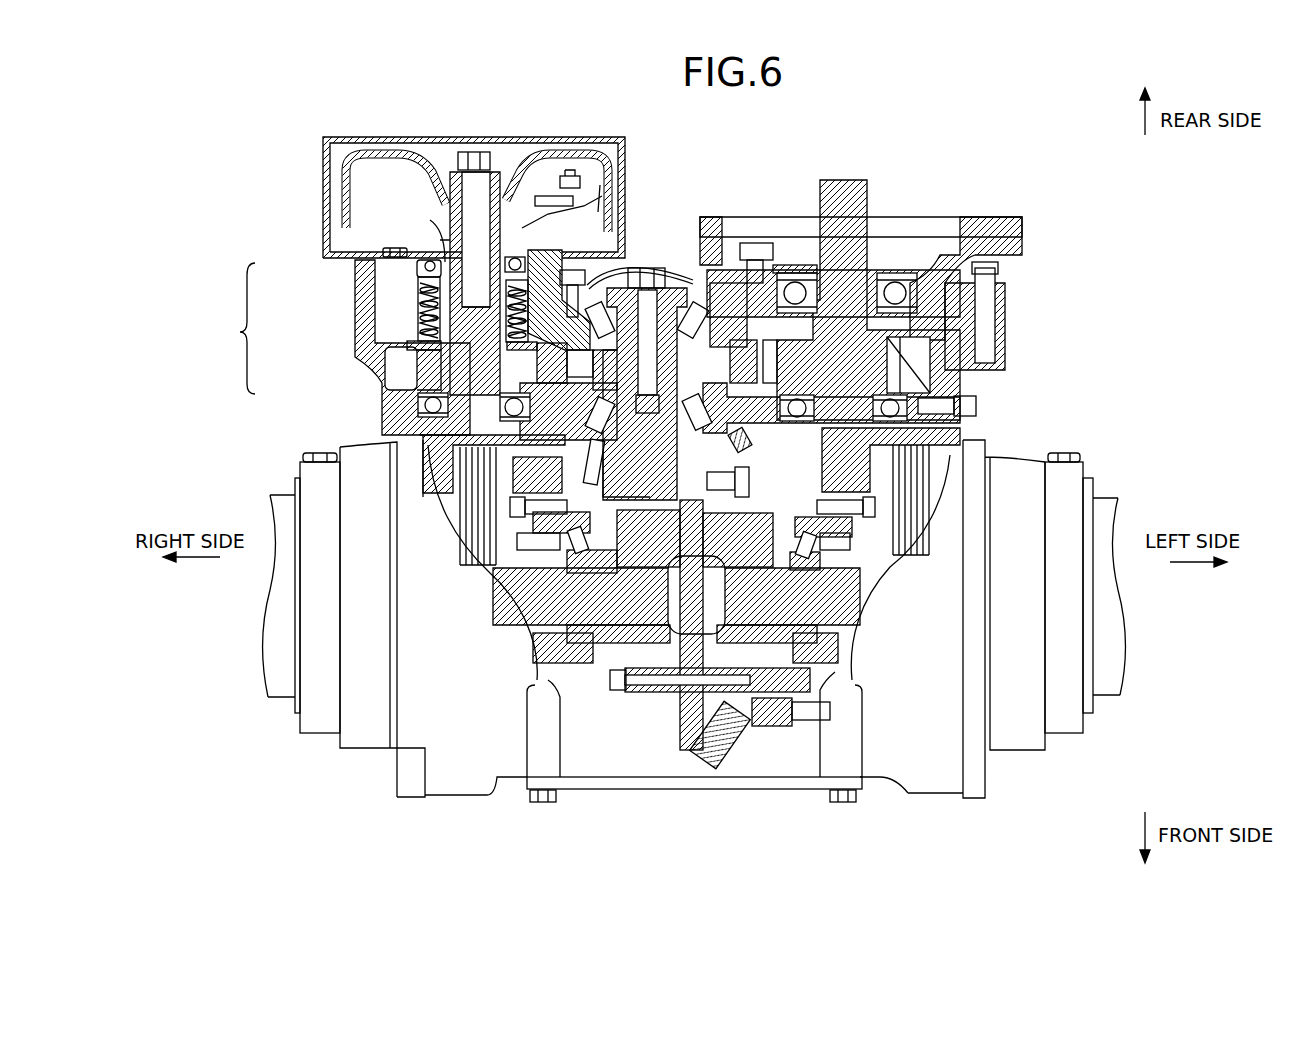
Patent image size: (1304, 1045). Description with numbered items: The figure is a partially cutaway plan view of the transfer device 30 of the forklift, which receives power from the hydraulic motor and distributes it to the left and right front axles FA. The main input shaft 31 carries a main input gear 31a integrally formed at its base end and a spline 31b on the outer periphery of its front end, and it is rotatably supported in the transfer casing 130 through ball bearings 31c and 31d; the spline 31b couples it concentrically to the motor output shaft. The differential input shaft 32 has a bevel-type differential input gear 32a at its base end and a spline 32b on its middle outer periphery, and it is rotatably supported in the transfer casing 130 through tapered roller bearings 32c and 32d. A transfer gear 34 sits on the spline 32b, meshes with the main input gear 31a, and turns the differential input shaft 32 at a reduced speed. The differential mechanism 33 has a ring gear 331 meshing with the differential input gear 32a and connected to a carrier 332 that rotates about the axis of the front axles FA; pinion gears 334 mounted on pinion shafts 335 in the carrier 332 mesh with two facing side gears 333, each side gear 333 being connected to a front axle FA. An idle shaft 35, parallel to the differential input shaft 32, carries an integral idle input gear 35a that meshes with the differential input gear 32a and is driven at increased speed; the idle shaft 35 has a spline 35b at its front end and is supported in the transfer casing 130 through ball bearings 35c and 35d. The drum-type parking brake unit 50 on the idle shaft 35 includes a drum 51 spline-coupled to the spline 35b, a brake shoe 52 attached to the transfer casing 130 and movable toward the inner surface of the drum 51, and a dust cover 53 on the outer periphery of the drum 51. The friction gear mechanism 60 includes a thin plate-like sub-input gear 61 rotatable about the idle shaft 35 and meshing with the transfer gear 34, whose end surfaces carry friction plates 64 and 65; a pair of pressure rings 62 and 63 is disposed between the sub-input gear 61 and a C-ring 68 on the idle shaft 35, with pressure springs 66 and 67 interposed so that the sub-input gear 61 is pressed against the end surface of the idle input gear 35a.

The transfer device 30 is at (1040, 222).
The main input shaft 31 is at (838, 188).
The main input gear 31a is at (925, 375).
The spline 31b is at (870, 200).
The ball bearing 31c is at (905, 283).
The ball bearing 31d is at (960, 402).
The differential input shaft 32 is at (665, 300).
The differential input gear 32a is at (600, 465).
The spline 32b is at (713, 310).
The tapered roller bearing 32c is at (693, 305).
The tapered roller bearing 32d is at (735, 425).
The differential mechanism 33 is at (645, 738).
The transfer gear 34 is at (745, 365).
The idle shaft 35 is at (390, 432).
The idle input gear 35a is at (445, 383).
The spline 35b is at (520, 228).
The ball bearing 35c is at (395, 252).
The ball bearing 35d is at (430, 403).
The parking brake unit 50 is at (300, 160).
The drum 51 is at (345, 190).
The brake shoe 52 is at (583, 187).
The dust cover 53 is at (625, 147).
The friction gear mechanism 60 is at (375, 325).
The sub-input gear 61 is at (445, 375).
The pressure ring 62 is at (412, 328).
The pressure ring 63 is at (417, 288).
The friction plate 64 is at (448, 392).
The friction plate 65 is at (425, 343).
The pressure spring 66 is at (420, 306).
The pressure spring 67 is at (447, 262).
The C-ring 68 is at (438, 236).
The transfer casing 130 is at (1005, 330).
The ring gear 331 is at (712, 745).
The carrier 332 is at (760, 690).
The side gear 333 is at (650, 692).
The pinion gear 334 is at (755, 548).
The pinion shaft 335 is at (750, 497).
The front axle FA is at (540, 622).